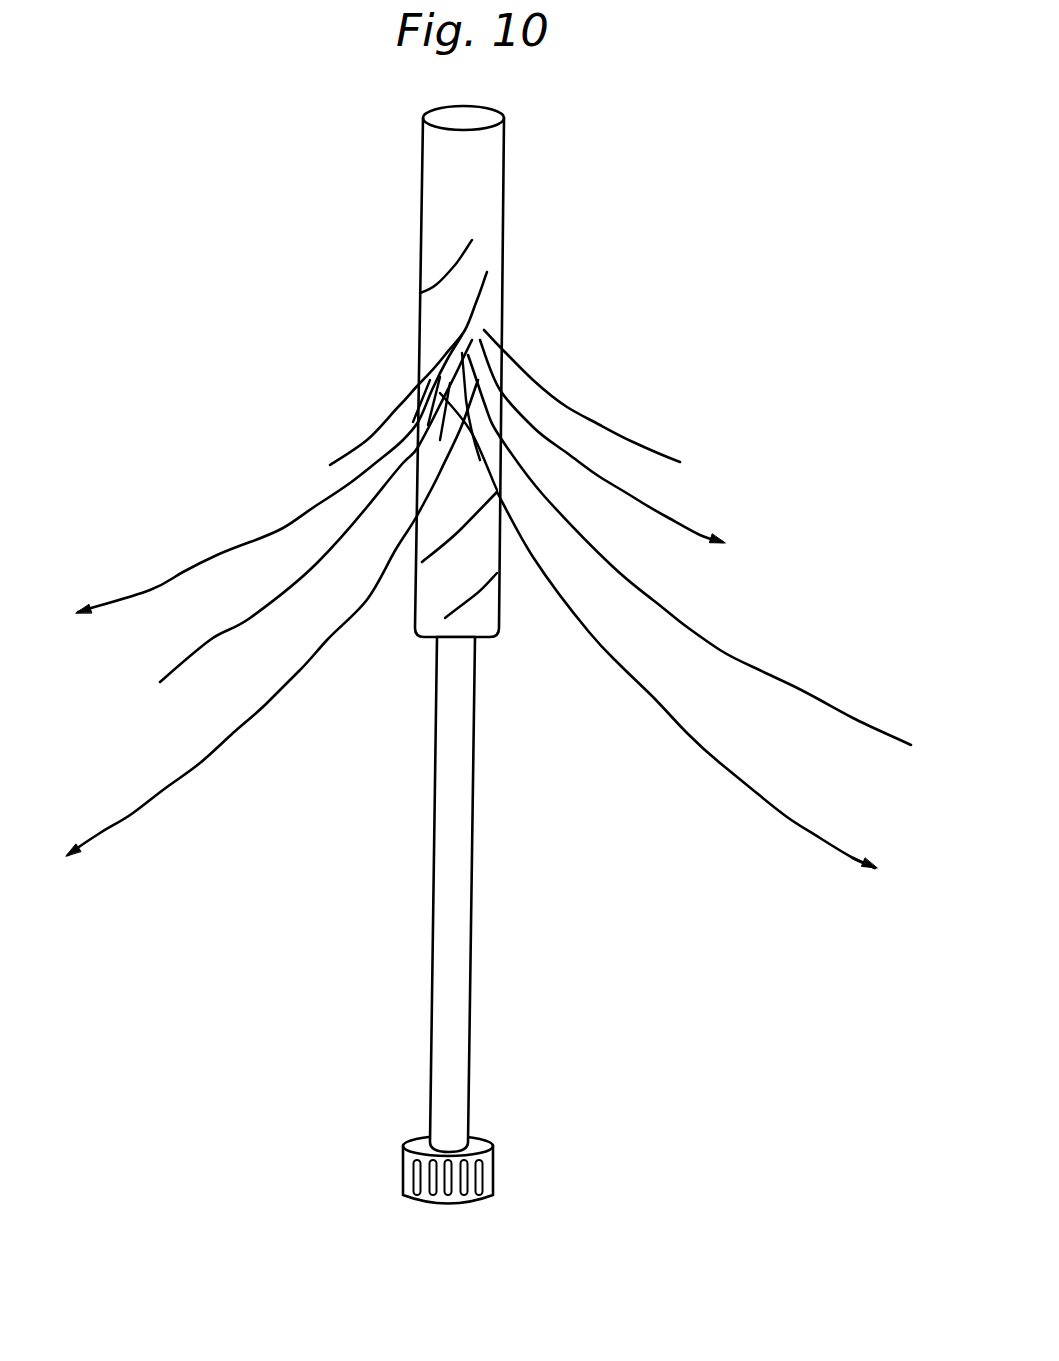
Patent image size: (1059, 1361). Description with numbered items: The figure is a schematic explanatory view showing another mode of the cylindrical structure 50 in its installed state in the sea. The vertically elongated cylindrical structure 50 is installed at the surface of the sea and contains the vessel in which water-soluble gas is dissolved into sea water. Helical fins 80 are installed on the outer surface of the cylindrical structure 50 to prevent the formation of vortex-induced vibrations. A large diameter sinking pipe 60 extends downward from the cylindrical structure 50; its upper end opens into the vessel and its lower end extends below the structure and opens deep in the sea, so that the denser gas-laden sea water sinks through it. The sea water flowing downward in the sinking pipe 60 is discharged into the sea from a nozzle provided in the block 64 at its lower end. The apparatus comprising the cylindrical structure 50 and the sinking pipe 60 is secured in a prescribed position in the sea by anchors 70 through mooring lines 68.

The cylindrical structure 50 is at (475, 175).
The sinking pipe 60 is at (462, 857).
The block 64 is at (493, 1152).
The mooring lines 68 is at (710, 763).
The anchors 70 is at (870, 868).
The helical fins 80 is at (490, 300).